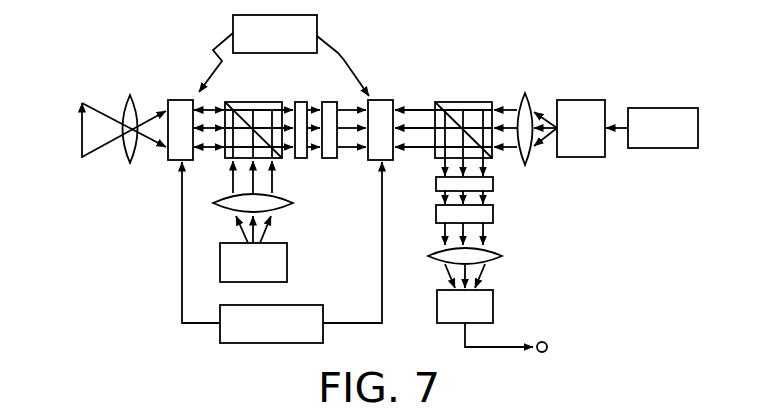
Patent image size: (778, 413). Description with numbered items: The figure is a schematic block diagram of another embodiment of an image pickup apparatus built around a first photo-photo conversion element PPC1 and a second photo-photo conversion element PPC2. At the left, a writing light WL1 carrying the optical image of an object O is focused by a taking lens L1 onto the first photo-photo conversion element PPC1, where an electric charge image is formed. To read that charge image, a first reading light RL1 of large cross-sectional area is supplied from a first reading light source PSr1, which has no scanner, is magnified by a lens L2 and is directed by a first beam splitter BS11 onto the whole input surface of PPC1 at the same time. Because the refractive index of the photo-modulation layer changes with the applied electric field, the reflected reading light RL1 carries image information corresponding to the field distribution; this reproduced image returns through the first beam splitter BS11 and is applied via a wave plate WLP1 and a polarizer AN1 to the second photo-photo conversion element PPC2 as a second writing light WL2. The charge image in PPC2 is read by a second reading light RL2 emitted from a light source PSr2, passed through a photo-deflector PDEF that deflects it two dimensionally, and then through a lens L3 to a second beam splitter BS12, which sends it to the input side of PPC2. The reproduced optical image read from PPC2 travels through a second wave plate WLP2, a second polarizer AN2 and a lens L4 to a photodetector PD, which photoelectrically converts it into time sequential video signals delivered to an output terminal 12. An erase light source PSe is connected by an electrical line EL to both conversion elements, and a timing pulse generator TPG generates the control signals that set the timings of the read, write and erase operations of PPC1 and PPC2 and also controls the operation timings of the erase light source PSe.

The object O is at (80, 137).
The taking lens L1 is at (128, 95).
The writing light WL1 is at (152, 152).
The first photo-photo conversion element PPC1 is at (180, 100).
The first reading light RL1 is at (213, 153).
The first beam splitter BS11 is at (247, 102).
The wave plate WLP1 is at (302, 158).
The polarizer AN1 is at (332, 102).
The second writing light WL2 is at (352, 152).
The second photo-photo conversion element PPC2 is at (380, 100).
The second reading light RL2 is at (418, 102).
The second beam splitter BS12 is at (475, 100).
The lens L3 is at (525, 97).
The photo-deflector PDEF is at (595, 100).
The light source PSr2 is at (652, 128).
The erase light source PSe is at (275, 34).
The electrical line EL is at (214, 50).
The lens L2 is at (218, 206).
The first reading light source PSr1 is at (253, 249).
The timing pulse generator TPG is at (282, 252).
The wave plate WLP2 is at (493, 184).
The polarizer AN2 is at (493, 212).
The lens L4 is at (502, 256).
The photodetector PD is at (465, 306).
The output terminal 12 is at (547, 347).